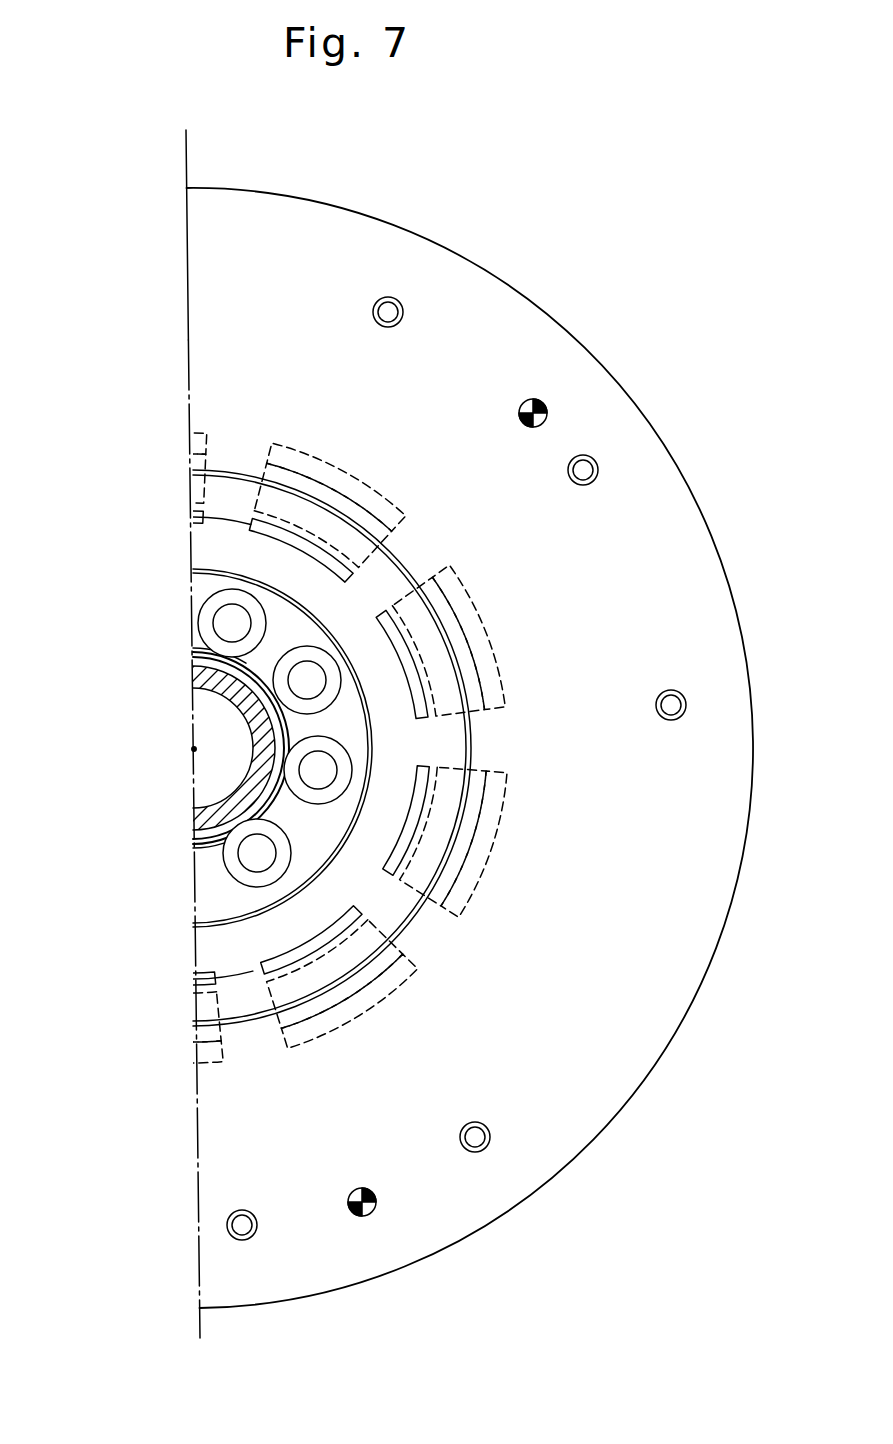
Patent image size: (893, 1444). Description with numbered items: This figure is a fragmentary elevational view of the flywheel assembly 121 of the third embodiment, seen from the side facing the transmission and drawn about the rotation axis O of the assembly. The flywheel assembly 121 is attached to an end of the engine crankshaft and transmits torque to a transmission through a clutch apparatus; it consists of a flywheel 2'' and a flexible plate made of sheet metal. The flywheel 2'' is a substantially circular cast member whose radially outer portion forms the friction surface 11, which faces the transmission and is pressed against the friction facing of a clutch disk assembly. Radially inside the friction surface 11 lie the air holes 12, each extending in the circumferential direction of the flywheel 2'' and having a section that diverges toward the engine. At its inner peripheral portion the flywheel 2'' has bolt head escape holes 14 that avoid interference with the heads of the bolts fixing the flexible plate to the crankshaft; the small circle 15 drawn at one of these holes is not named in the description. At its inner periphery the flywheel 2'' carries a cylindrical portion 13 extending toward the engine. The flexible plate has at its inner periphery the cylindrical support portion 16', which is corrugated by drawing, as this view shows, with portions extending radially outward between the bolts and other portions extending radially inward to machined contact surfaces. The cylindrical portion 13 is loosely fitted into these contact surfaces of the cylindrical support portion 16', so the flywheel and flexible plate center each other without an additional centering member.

The flywheel 2'' is at (470, 715).
The flywheel assembly 121 is at (578, 203).
The friction surface 11 is at (588, 557).
The air holes 12 is at (268, 468).
The cylindrical portion 13 is at (228, 688).
The bolt head escape holes 14 is at (222, 600).
The stop pin / rivet 15 is at (218, 630).
The cylindrical support portion 16' is at (176, 748).
The rotation axis O is at (194, 750).